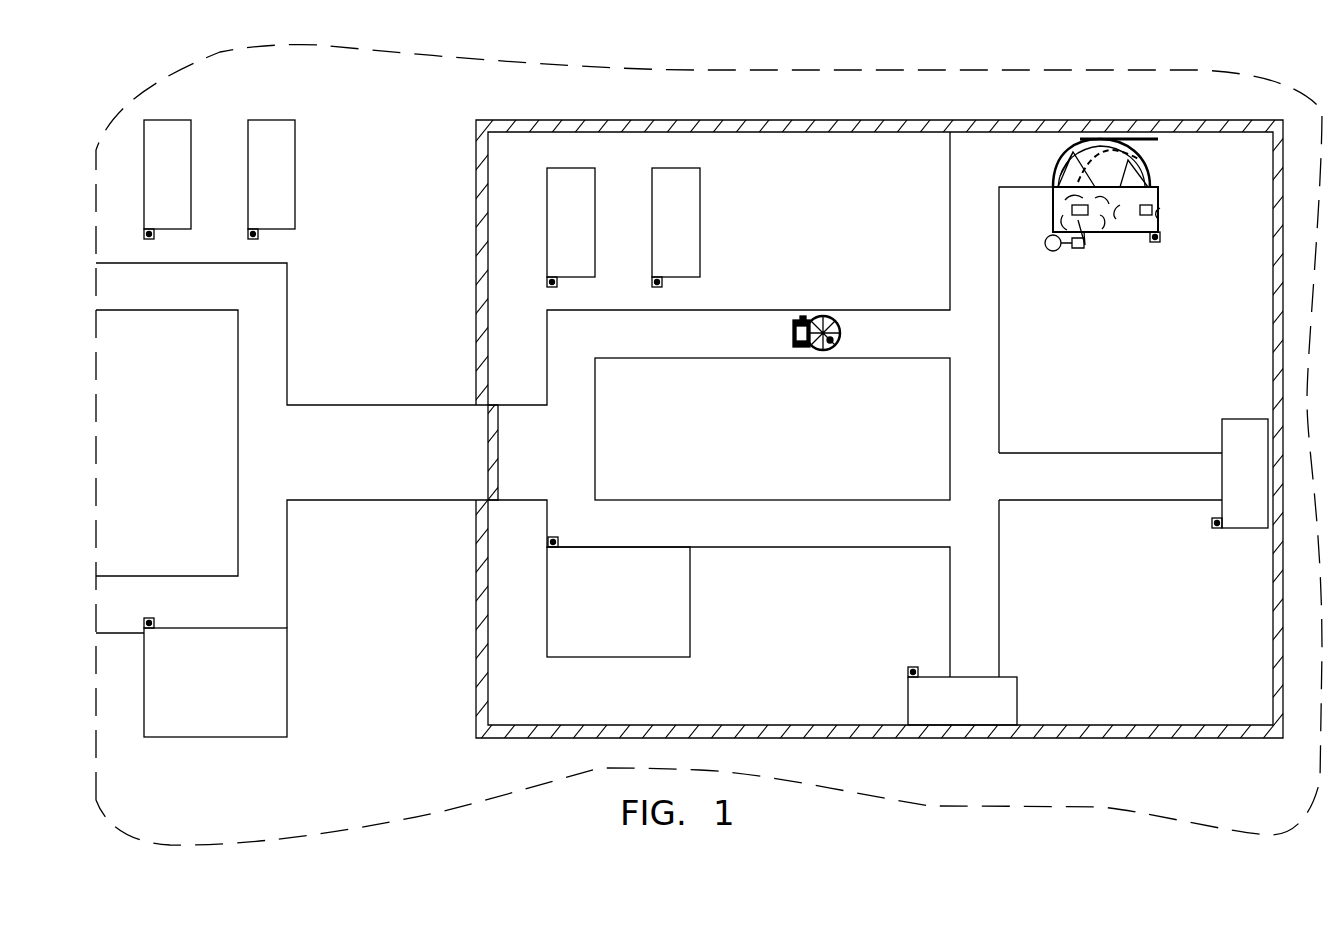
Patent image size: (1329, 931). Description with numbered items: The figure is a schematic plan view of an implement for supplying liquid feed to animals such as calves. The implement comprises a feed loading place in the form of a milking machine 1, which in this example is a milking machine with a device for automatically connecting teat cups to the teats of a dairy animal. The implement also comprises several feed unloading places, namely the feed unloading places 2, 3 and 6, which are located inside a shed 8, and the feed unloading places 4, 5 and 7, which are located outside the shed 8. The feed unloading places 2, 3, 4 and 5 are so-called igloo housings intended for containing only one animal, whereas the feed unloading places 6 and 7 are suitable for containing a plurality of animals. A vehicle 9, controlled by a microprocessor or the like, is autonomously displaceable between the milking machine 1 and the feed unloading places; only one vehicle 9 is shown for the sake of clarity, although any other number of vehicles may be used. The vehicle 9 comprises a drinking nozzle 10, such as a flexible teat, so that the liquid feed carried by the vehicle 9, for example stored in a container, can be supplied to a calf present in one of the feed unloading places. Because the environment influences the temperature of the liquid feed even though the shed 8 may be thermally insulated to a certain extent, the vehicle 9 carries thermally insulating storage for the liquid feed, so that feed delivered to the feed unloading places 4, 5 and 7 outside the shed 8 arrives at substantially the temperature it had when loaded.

The milking machine 1 is at (1155, 198).
The feed unloading place 2 is at (692, 180).
The feed unloading place 3 is at (566, 185).
The feed unloading place 4 is at (289, 135).
The feed unloading place 5 is at (166, 141).
The feed unloading place 6 is at (660, 556).
The feed unloading place 7 is at (262, 686).
The shed 8 is at (548, 730).
The vehicle 9 is at (835, 341).
The drinking nozzle 10 is at (790, 336).